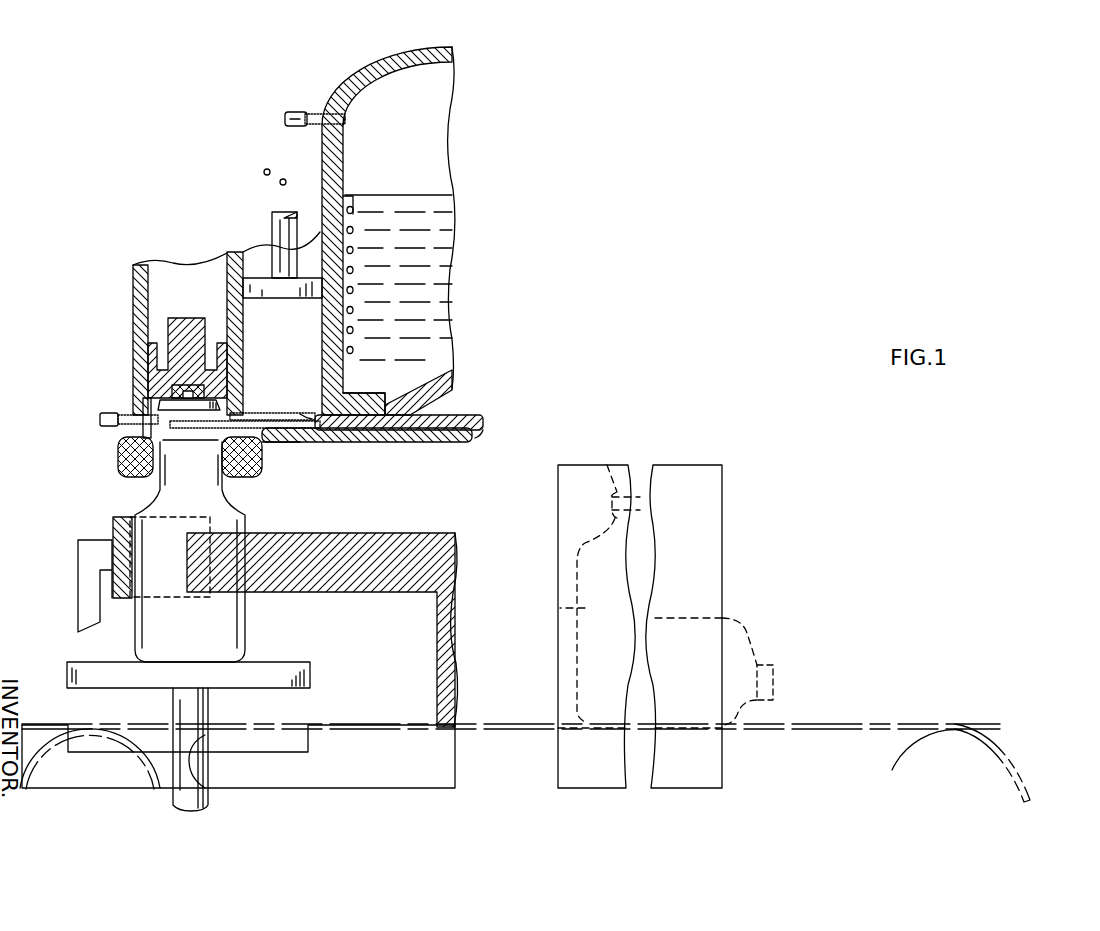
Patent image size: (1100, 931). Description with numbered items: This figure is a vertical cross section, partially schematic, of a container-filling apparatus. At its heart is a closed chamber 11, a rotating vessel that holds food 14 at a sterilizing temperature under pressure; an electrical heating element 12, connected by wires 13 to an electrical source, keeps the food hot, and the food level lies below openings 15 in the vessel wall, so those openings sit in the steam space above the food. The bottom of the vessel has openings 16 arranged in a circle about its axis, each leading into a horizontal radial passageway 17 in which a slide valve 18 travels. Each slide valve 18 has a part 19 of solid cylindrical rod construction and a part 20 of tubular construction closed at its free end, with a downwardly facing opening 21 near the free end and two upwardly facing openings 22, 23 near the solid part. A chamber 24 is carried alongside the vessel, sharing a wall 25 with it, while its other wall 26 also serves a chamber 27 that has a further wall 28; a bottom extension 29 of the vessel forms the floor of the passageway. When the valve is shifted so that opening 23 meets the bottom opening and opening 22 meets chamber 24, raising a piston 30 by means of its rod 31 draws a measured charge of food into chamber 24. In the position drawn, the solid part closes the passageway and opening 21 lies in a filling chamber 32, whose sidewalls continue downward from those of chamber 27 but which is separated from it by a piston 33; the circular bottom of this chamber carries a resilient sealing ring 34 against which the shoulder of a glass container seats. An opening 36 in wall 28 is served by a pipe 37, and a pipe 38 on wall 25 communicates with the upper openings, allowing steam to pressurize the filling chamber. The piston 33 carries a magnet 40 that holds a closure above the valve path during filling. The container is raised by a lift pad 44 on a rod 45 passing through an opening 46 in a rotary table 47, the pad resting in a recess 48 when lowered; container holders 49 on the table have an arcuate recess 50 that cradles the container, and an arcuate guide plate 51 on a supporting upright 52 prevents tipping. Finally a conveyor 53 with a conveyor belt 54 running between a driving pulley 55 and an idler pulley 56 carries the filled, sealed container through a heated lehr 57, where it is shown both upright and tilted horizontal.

The closed chamber 11 is at (393, 231).
The electrical heating element 12 is at (352, 200).
The wires 13 is at (322, 193).
The food 14 is at (402, 193).
The openings 15 is at (345, 118).
The openings 16 is at (385, 398).
The horizontal radial passageway 17 is at (479, 415).
The slide valve 18 is at (485, 410).
The part of solid cylindrical rod construction 19 is at (475, 437).
The part of tubular construction 20 is at (330, 442).
The downwardly facing opening 21 is at (210, 551).
The upwardly facing opening 22 is at (250, 413).
The upwardly facing opening 23 is at (305, 413).
The chamber 24 is at (268, 273).
The wall 25 is at (322, 162).
The wall 26 is at (229, 262).
The chamber 27 is at (197, 315).
The wall 28 is at (140, 305).
The bottom extension 29 is at (300, 442).
The piston 30 is at (258, 276).
The rod 31 is at (272, 214).
The chamber 32 is at (172, 423).
The piston 33 is at (150, 357).
The sealing ring 34 is at (258, 462).
The opening 36 is at (115, 462).
The pipe 37 is at (104, 427).
The pipe 38 is at (290, 112).
The magnet 40 is at (143, 408).
The lift pad 44 is at (300, 662).
The rod 45 is at (208, 700).
The opening 46 is at (205, 755).
The rotary table 47 is at (238, 739).
The recess 48 is at (308, 740).
The container holders 49 is at (370, 533).
The arcuate recess 50 is at (250, 536).
The arcuate guide plate 51 is at (113, 517).
The supporting upright 52 is at (78, 555).
The conveyor 53 is at (936, 704).
The conveyor belt 54 is at (798, 724).
The driving pulley 55 is at (892, 770).
The idler pulley 56 is at (161, 774).
The lehr 57 is at (660, 610).